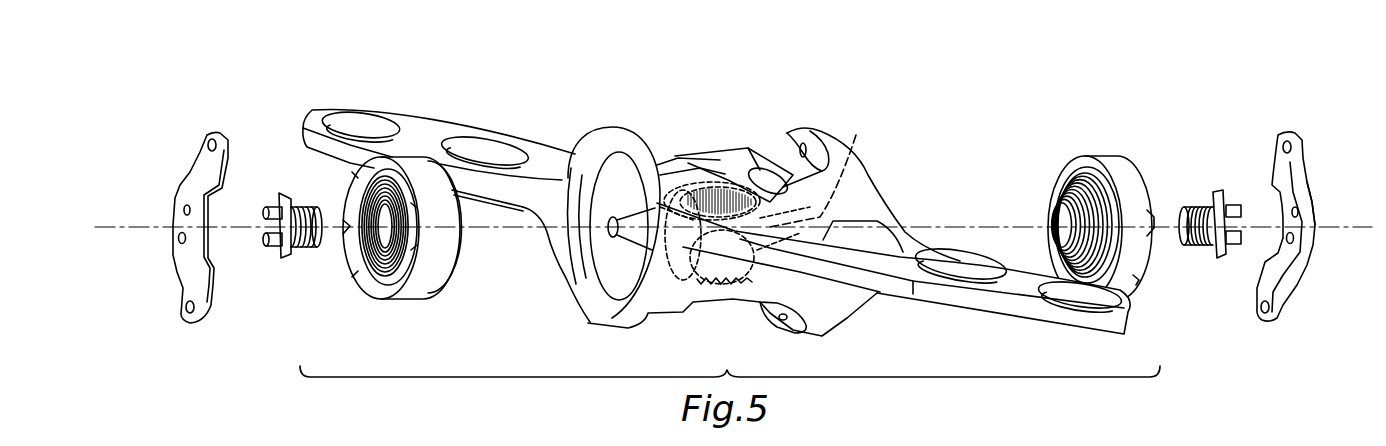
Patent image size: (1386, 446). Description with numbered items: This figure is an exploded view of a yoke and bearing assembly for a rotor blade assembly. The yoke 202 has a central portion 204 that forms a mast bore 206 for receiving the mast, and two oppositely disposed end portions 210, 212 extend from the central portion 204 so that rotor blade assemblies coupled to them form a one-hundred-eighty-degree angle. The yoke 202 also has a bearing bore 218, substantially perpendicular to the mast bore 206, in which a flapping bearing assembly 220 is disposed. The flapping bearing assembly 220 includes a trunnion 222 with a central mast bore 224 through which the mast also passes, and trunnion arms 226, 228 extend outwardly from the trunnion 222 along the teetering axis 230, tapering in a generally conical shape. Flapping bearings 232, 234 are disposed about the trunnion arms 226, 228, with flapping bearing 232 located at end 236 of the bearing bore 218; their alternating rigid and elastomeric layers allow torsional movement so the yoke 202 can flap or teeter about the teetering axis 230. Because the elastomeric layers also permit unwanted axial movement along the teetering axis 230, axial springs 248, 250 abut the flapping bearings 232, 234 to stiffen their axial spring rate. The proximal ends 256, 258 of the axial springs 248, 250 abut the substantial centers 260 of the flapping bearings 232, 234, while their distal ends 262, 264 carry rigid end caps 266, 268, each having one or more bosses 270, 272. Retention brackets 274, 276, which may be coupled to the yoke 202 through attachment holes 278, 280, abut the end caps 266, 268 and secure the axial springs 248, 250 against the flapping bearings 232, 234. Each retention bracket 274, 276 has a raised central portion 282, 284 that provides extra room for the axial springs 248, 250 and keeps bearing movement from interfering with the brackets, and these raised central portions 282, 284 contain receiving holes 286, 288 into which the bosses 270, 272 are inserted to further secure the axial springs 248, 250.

The yoke 202 is at (820, 135).
The central portion 204 is at (650, 126).
The mast bore 206 is at (735, 172).
The end portion 210 is at (418, 132).
The end portion 212 is at (1082, 330).
The bearing bore 218 is at (620, 167).
The flapping bearing assembly 220 is at (758, 178).
The trunnion 222 is at (717, 290).
The central mast bore 224 is at (685, 172).
The trunnion arm 226 is at (600, 281).
The trunnion arm 228 is at (819, 171).
The teetering axis 230 is at (960, 225).
The flapping bearing 232 is at (413, 294).
The flapping bearing 234 is at (1107, 160).
The end of bearing bore 236 is at (600, 210).
The axial spring 248 is at (297, 248).
The axial spring 250 is at (1203, 205).
The proximal end 256 is at (319, 236).
The proximal end 258 is at (1183, 220).
The center of flapping bearing 260 is at (374, 268).
The distal end 262 is at (287, 258).
The distal end 264 is at (1216, 192).
The end cap 266 is at (280, 203).
The end cap 268 is at (1218, 257).
The boss 270 is at (262, 239).
The boss 272 is at (1238, 205).
The retention bracket 274 is at (190, 177).
The retention bracket 276 is at (1287, 134).
The attachment hole 278 is at (208, 144).
The attachment hole 280 is at (1270, 309).
The raised central portion 282 is at (175, 219).
The raised central portion 284 is at (1316, 218).
The receiving hole 286 is at (174, 238).
The receiving hole 288 is at (1294, 240).